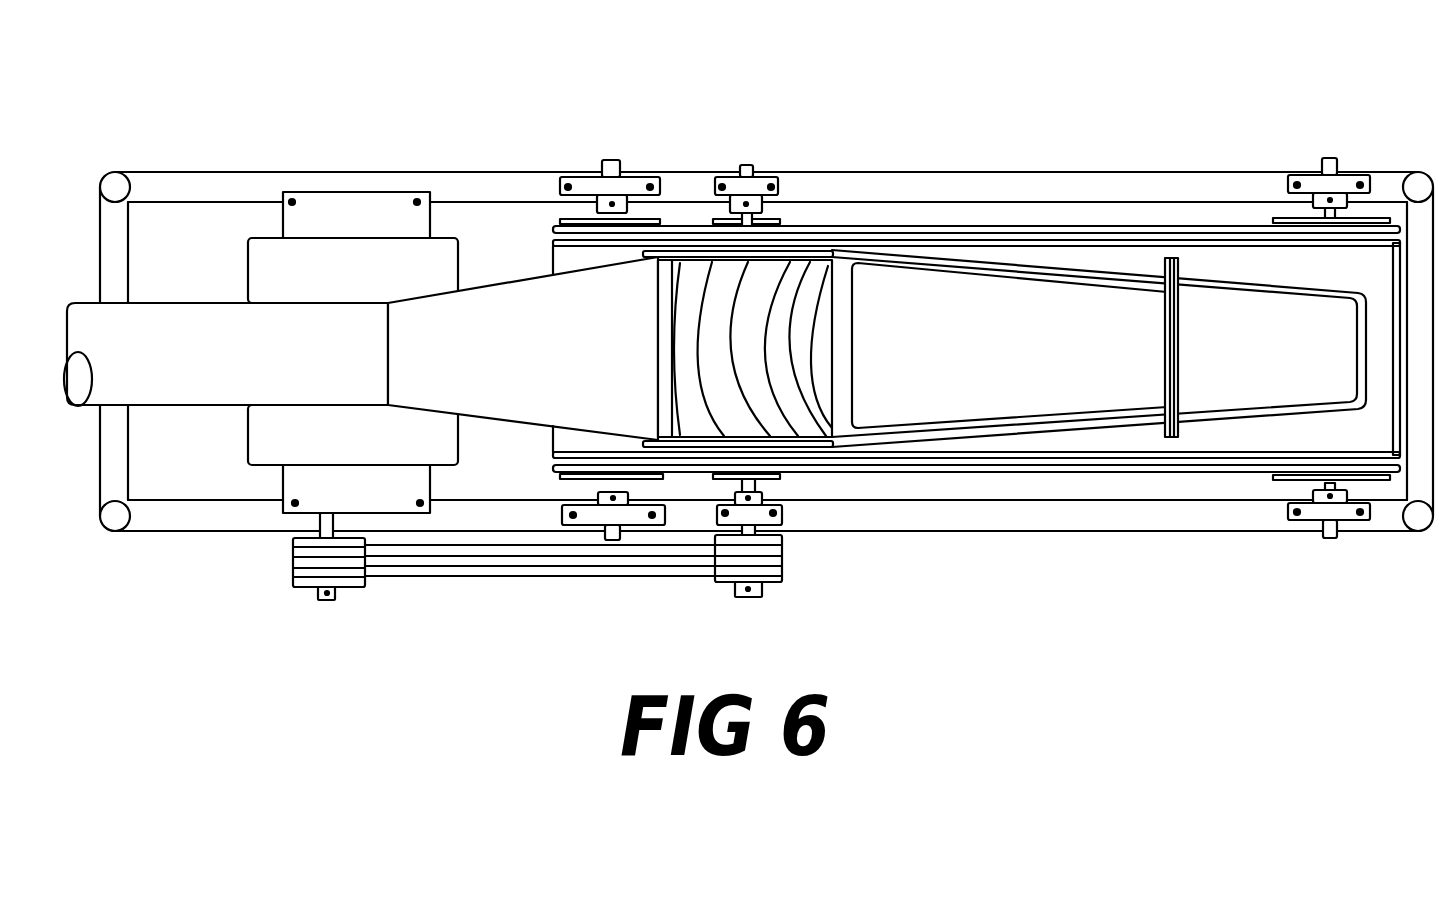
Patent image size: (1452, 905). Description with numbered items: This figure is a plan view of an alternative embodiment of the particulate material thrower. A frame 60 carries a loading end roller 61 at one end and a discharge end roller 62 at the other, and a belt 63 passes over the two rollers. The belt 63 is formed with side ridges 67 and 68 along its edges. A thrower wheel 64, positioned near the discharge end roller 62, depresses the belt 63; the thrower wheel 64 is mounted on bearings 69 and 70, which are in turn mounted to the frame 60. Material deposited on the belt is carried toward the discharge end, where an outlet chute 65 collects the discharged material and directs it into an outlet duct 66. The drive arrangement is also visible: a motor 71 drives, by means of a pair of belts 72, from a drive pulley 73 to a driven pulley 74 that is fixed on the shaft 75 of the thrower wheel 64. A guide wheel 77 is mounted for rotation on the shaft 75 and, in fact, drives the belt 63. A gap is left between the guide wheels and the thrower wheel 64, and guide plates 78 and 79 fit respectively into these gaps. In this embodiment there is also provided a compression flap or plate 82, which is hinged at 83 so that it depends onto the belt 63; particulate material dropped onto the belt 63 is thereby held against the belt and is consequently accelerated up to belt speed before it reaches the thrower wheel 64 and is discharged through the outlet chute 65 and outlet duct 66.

The frame 60 is at (912, 178).
The loading end roller 61 is at (1378, 193).
The discharge end roller 62 is at (575, 215).
The belt 63 is at (1293, 270).
The thrower wheel 64 is at (730, 320).
The outlet chute 65 is at (505, 310).
The outlet duct 66 is at (130, 318).
The side ridge 67 is at (548, 240).
The side ridge 68 is at (556, 470).
The bearing 69 is at (755, 185).
The bearing 70 is at (757, 515).
The motor 71 is at (340, 250).
The belts 72 is at (458, 552).
The drive pulley 73 is at (313, 578).
The driven pulley 74 is at (770, 577).
The shaft 75 is at (763, 537).
The guide wheel 77 is at (813, 240).
The guide plate 78 is at (1060, 268).
The guide plate 79 is at (1153, 422).
The compression flap or plate 82 is at (1008, 300).
The hinge 83 is at (1170, 295).